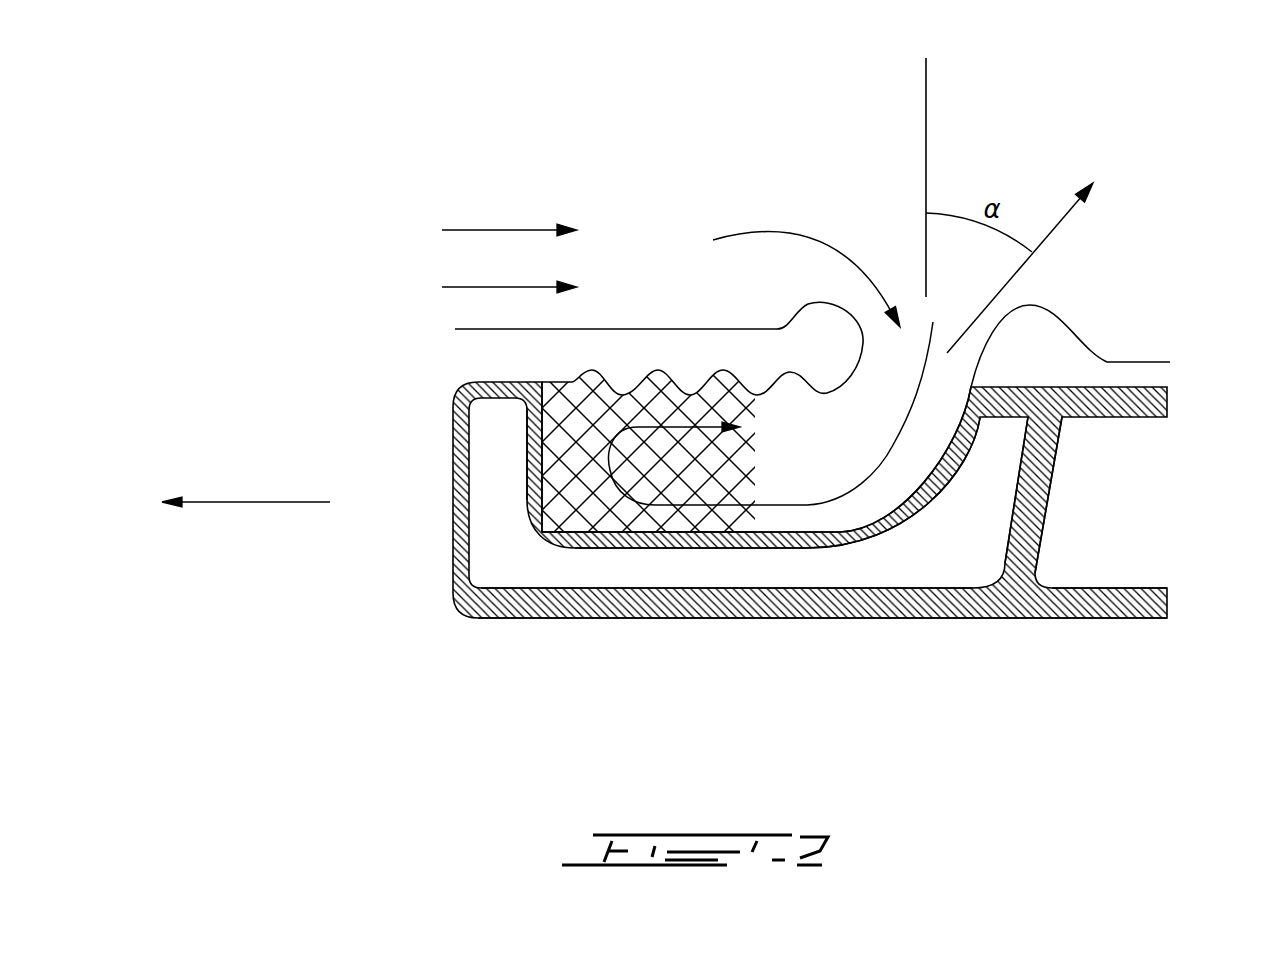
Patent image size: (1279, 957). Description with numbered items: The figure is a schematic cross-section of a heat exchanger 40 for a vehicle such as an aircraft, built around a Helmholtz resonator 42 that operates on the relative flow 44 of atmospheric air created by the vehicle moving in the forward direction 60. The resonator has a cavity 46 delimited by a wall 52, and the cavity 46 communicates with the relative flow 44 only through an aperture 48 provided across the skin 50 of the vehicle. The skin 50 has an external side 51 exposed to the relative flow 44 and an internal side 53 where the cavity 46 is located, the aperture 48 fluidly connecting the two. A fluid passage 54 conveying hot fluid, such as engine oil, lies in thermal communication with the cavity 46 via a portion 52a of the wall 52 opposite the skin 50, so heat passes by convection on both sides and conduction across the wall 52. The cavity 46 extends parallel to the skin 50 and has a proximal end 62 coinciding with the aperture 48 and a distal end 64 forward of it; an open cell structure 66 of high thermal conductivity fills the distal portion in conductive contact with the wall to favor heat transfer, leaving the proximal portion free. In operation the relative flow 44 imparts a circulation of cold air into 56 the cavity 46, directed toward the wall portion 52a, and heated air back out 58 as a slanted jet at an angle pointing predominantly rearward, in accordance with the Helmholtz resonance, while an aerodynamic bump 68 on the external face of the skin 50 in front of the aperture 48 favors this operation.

The heat exchanger 40 is at (980, 700).
The Helmholtz resonator 42 is at (998, 610).
The relative flow of atmospheric air 44 is at (510, 230).
The cavity 46 is at (748, 427).
The aperture 48 is at (963, 363).
The skin 50 is at (617, 350).
The external side 51 is at (628, 205).
The wall 52 is at (800, 549).
The portion of the wall 52a is at (707, 549).
The internal side 53 is at (780, 455).
The fluid passage 54 is at (555, 557).
The circulation of atmospheric air into the cavity 56 is at (815, 240).
The circulation of air back out from the cavity 58 is at (1047, 238).
The forward direction of motion 60 is at (245, 502).
The proximal end 62 is at (917, 447).
The distal end 64 is at (553, 497).
The open cell structure 66 is at (618, 526).
The aerodynamic bump 68 is at (817, 323).